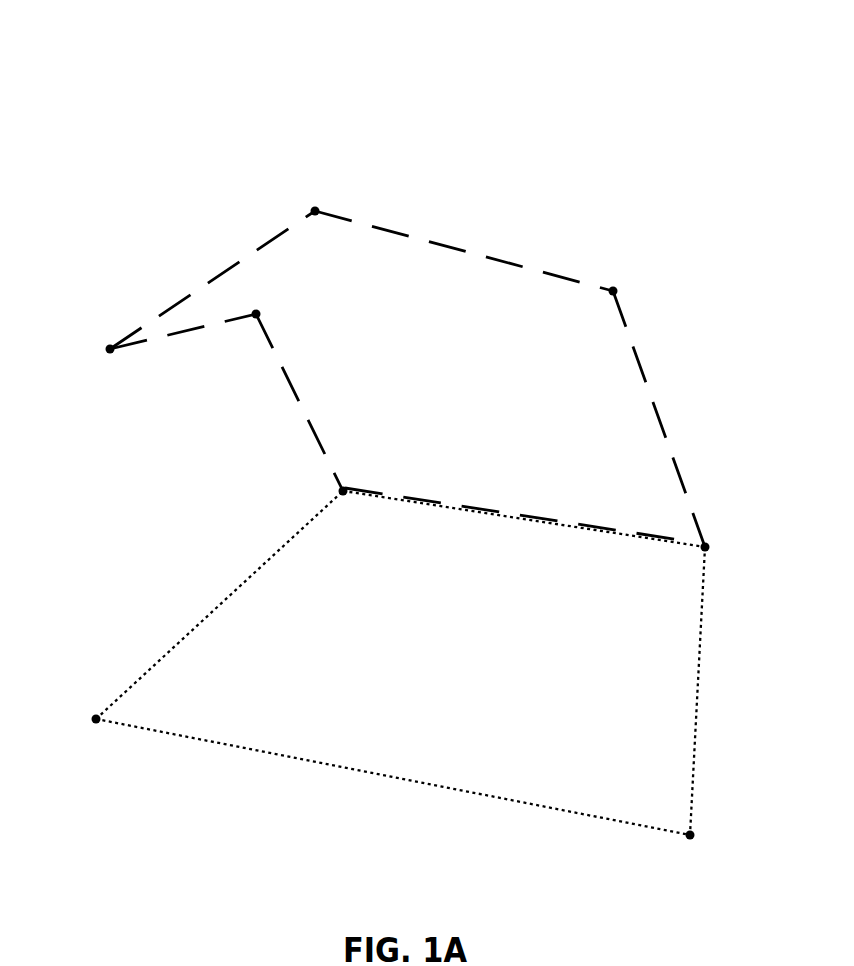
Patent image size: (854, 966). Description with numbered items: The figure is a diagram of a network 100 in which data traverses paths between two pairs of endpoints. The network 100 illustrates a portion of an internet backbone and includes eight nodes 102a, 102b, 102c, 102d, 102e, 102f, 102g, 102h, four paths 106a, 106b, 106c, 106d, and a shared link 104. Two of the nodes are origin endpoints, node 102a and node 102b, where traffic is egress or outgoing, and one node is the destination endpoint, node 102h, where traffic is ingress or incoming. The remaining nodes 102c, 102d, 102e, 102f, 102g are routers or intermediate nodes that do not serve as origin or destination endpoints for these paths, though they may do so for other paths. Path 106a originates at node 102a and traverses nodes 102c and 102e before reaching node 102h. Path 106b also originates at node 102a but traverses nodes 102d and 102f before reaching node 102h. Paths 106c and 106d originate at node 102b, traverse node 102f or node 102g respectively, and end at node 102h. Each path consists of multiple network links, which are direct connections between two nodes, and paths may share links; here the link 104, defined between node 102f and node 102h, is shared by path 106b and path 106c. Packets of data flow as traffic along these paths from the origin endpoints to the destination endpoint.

The network 100 is at (420, 49).
The node 102a is at (110, 350).
The node 102b is at (96, 720).
The node 102c is at (315, 204).
The node 102d is at (256, 311).
The node 102e is at (612, 288).
The node 102f is at (343, 488).
The node 102g is at (690, 835).
The node 102h is at (705, 545).
The shared link 104 is at (472, 508).
The path 106a is at (401, 228).
The path 106b is at (298, 398).
The path 106c is at (210, 620).
The path 106d is at (402, 778).